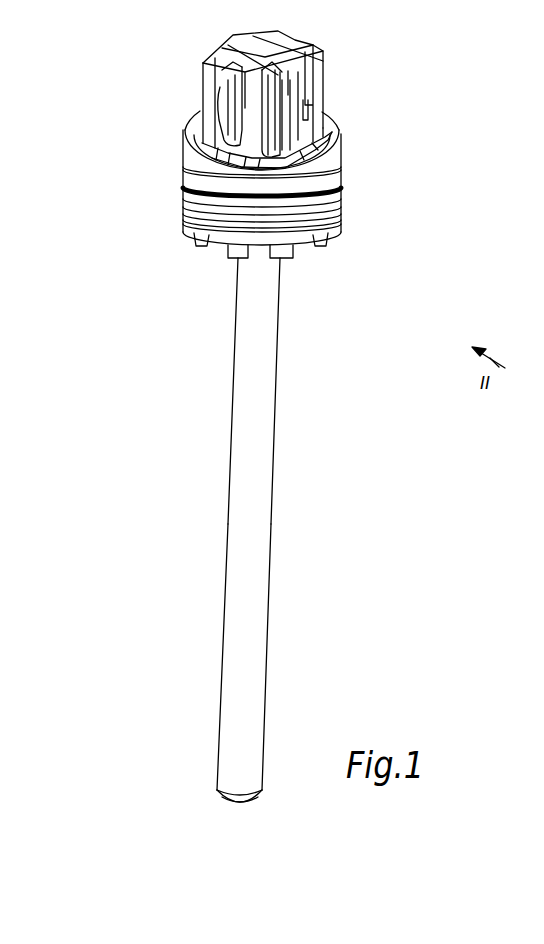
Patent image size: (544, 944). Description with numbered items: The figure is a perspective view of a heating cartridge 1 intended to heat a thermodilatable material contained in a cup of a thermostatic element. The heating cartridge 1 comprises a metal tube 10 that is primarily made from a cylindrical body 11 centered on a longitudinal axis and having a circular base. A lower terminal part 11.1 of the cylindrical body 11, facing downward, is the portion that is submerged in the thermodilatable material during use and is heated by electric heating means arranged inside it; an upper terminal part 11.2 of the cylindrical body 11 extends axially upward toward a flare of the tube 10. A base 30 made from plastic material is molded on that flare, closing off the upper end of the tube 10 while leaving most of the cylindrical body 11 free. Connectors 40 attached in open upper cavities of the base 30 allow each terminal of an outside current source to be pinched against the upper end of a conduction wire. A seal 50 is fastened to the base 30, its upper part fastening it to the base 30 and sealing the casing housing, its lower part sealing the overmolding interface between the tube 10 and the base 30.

The heating cartridge 1 is at (194, 789).
The metal tube 10 is at (208, 492).
The cylindrical body 11 is at (405, 383).
The terminal part 11.1 is at (235, 737).
The upper terminal part 11.2 is at (262, 295).
The base 30 is at (170, 144).
The connector 40 is at (258, 162).
The seal 50 is at (172, 209).